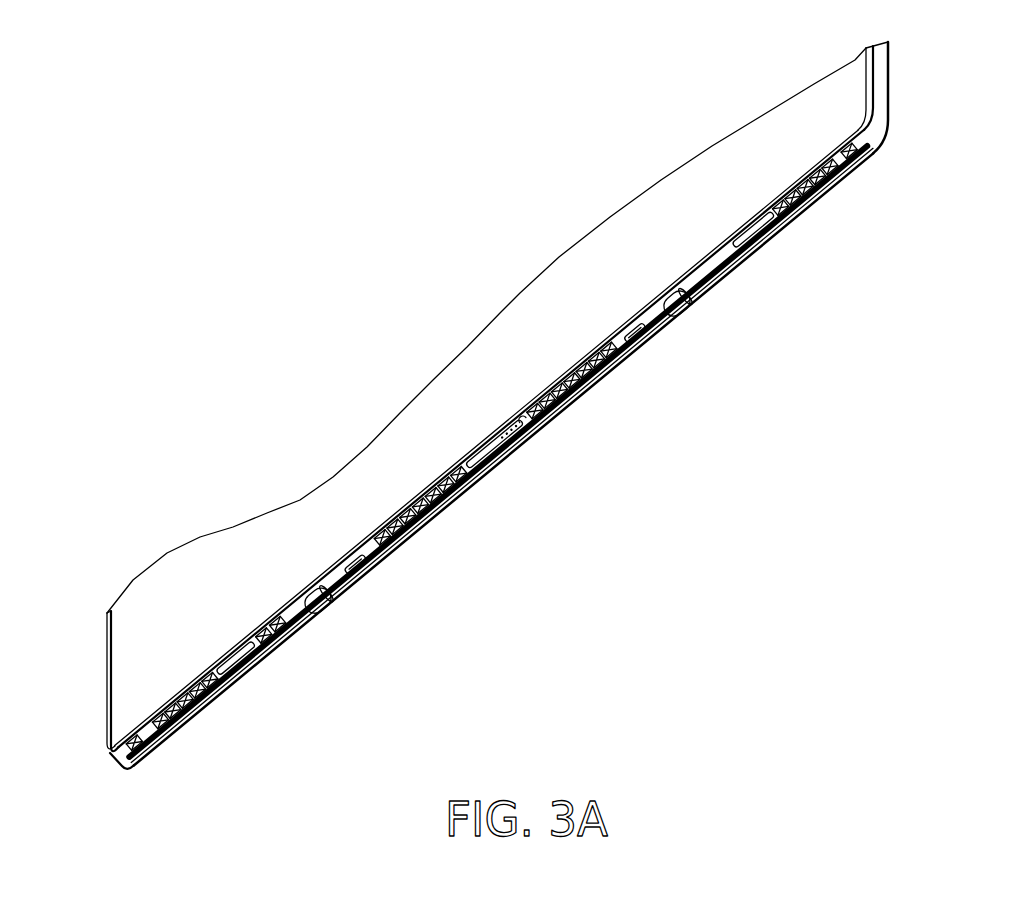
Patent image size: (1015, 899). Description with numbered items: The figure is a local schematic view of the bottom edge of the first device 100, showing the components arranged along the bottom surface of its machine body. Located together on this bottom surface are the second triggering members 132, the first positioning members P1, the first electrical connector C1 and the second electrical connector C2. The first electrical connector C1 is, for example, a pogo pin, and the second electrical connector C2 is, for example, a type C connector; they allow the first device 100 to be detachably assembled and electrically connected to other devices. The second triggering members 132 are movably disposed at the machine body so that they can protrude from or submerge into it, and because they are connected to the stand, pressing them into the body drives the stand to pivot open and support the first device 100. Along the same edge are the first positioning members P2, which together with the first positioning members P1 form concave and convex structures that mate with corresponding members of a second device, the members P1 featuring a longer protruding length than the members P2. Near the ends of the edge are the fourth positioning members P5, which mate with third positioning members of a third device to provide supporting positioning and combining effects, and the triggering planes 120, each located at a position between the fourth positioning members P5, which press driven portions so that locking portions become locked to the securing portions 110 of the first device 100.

The first device 100 is at (890, 90).
The securing portions 110 is at (768, 243).
The triggering planes 120 is at (834, 162).
The second triggering members 132 is at (684, 320).
The first positioning members P1 is at (651, 347).
The first positioning members P2 is at (508, 462).
The fourth positioning members P5 is at (505, 464).
The first electrical connector C1 is at (527, 449).
The second electrical connector C2 is at (290, 640).